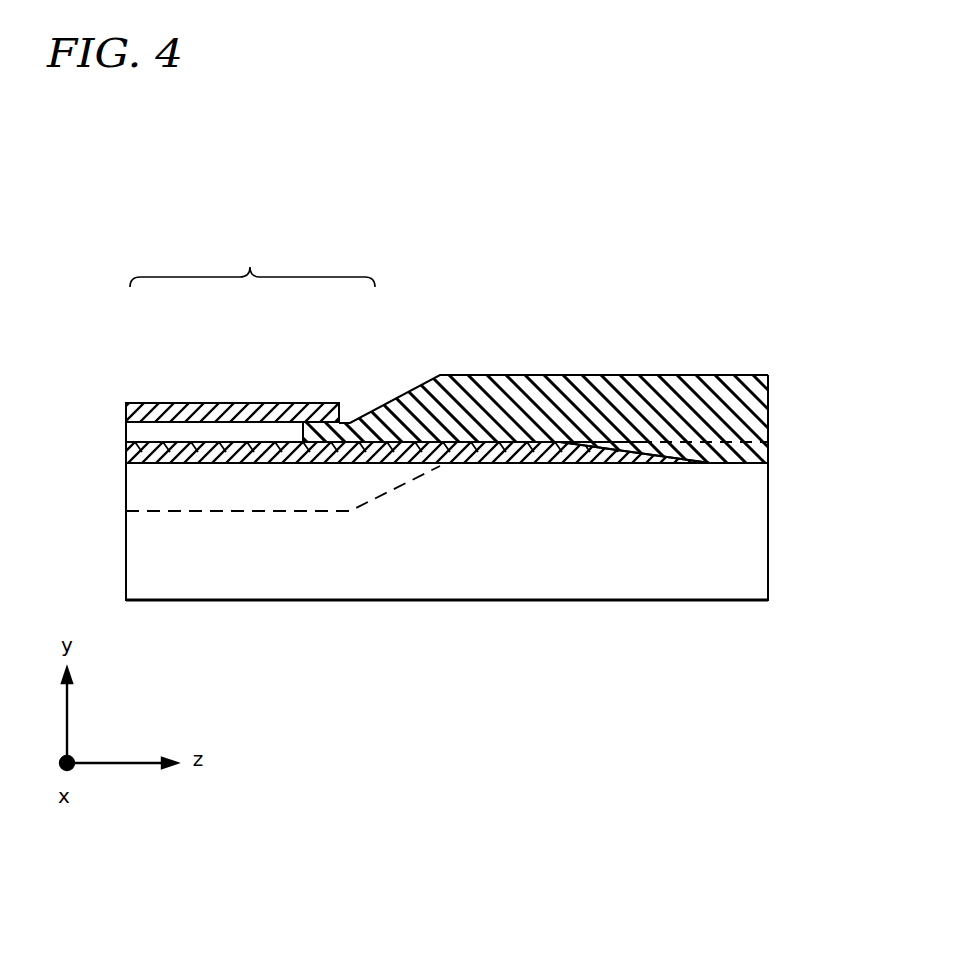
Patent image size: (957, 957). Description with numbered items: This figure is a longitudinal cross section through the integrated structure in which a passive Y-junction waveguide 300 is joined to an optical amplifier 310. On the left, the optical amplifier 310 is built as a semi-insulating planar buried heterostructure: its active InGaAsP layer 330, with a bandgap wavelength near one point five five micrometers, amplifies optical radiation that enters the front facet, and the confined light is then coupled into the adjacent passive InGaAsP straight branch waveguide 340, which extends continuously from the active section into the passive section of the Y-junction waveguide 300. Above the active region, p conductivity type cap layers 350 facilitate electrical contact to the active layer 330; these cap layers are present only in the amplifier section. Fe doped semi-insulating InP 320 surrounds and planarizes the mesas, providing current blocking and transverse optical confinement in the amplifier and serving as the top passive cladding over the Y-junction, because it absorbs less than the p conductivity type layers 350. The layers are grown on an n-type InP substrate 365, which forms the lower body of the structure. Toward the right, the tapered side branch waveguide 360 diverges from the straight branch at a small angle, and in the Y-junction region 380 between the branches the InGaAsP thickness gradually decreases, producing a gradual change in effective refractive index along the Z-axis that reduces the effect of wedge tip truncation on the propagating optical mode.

The Y-junction waveguide 300 is at (487, 375).
The optical amplifier 310 is at (252, 260).
The semi-insulating InP 320 is at (670, 393).
The active InGaAsP layer 330 is at (231, 436).
The straight branch waveguide 340 is at (160, 453).
The p conductivity type layers 350 is at (243, 404).
The side branch waveguide 360 is at (737, 438).
The n-InP substrate 365 is at (522, 592).
The Y-junction region 380 is at (710, 460).